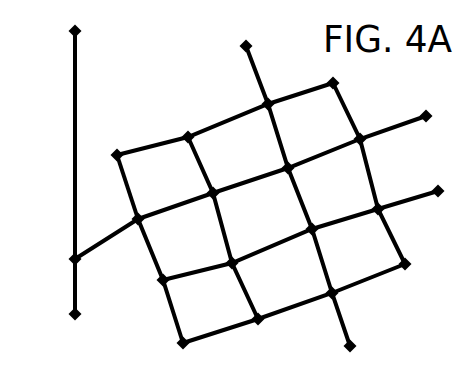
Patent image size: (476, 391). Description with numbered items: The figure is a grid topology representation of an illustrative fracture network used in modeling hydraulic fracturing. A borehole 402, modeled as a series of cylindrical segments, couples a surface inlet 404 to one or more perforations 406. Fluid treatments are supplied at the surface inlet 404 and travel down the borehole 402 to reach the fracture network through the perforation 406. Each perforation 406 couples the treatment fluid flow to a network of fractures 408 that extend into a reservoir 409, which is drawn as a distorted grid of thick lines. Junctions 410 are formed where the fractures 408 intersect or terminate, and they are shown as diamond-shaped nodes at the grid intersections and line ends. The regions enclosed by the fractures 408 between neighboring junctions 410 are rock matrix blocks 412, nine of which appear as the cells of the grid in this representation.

The borehole 402 is at (72, 134).
The surface inlet 404 is at (71, 29).
The perforation 406 is at (70, 258).
The fractures 408 is at (145, 252).
The reservoir 409 is at (182, 99).
The junctions 410 is at (243, 43).
The rock matrix blocks 412 is at (187, 188).